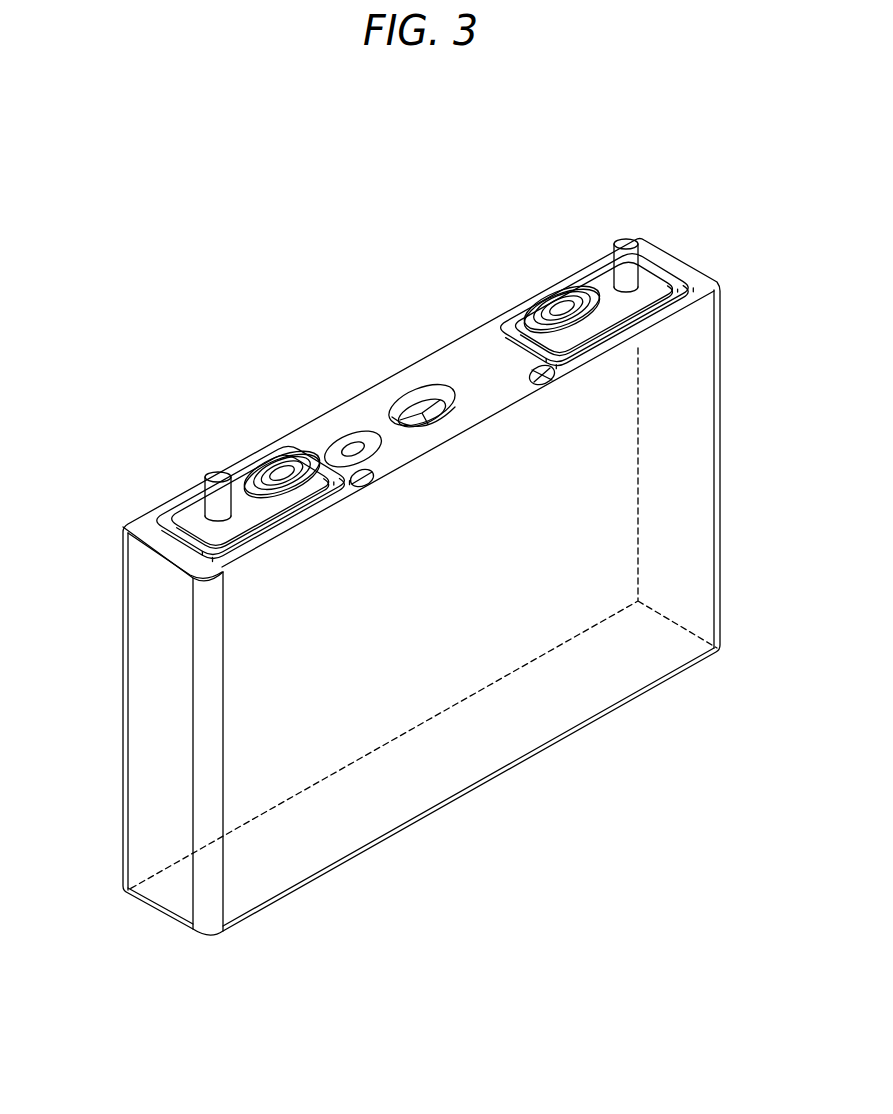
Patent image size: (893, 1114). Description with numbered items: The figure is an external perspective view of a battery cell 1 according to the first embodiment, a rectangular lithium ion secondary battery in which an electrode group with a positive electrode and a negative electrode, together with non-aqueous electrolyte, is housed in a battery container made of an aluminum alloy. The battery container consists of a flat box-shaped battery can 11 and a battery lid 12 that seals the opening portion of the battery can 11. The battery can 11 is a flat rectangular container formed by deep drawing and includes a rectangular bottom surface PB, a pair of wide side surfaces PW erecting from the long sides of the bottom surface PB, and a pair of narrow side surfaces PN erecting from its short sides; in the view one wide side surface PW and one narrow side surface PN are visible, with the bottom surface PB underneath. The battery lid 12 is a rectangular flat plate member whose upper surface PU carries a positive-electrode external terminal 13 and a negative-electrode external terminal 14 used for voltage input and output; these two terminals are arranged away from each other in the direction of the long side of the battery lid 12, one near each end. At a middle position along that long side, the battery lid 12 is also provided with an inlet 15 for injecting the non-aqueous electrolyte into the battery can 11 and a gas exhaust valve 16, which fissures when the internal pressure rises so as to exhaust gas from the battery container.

The battery cell 1 is at (268, 268).
The battery can 11 is at (537, 733).
The battery lid 12 is at (465, 348).
The positive-electrode external terminal 13 is at (597, 277).
The negative-electrode external terminal 14 is at (186, 507).
The inlet 15 is at (352, 450).
The gas exhaust valve 16 is at (415, 412).
The upper surface PU is at (128, 520).
The narrow side surfaces PN is at (147, 732).
The wide side surfaces PW is at (690, 455).
The bottom surface PB is at (440, 773).